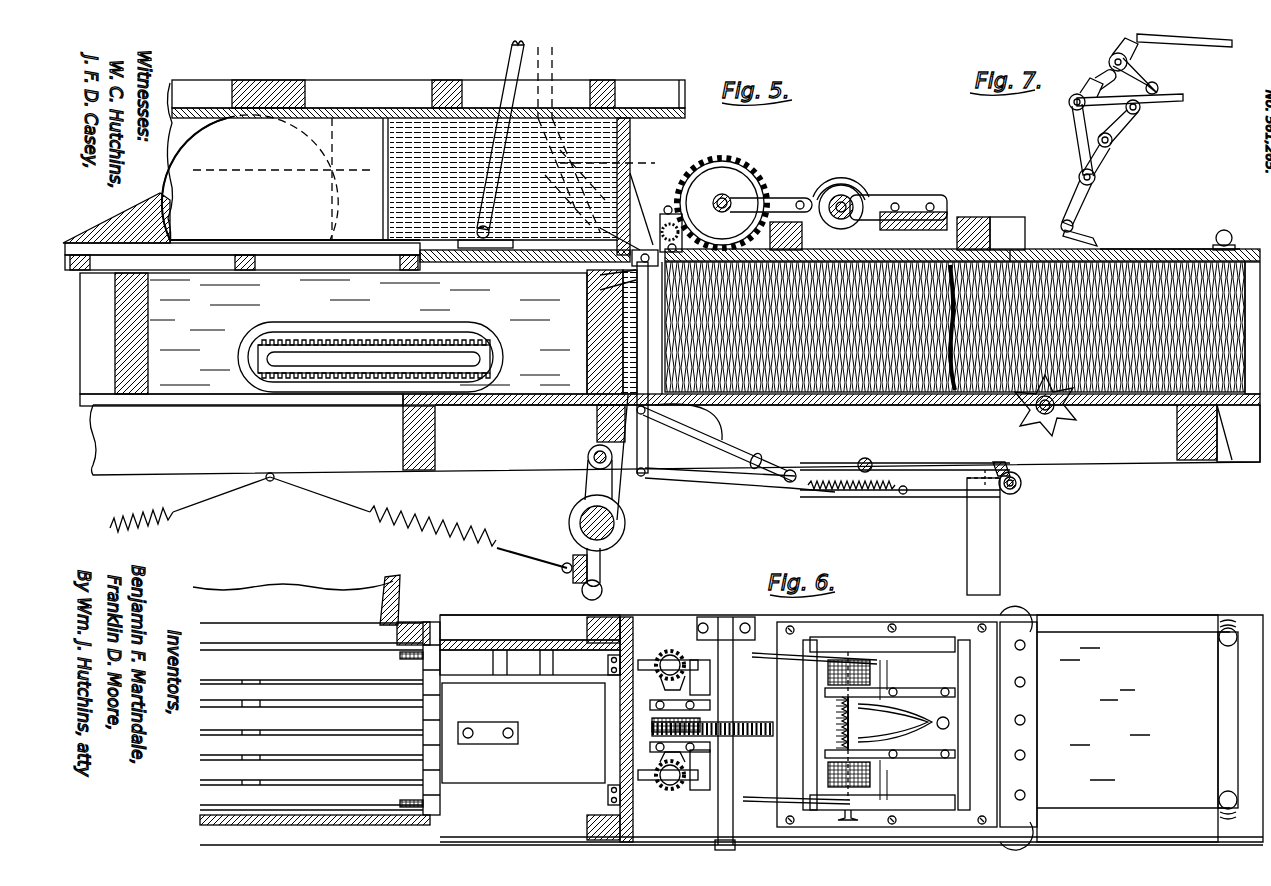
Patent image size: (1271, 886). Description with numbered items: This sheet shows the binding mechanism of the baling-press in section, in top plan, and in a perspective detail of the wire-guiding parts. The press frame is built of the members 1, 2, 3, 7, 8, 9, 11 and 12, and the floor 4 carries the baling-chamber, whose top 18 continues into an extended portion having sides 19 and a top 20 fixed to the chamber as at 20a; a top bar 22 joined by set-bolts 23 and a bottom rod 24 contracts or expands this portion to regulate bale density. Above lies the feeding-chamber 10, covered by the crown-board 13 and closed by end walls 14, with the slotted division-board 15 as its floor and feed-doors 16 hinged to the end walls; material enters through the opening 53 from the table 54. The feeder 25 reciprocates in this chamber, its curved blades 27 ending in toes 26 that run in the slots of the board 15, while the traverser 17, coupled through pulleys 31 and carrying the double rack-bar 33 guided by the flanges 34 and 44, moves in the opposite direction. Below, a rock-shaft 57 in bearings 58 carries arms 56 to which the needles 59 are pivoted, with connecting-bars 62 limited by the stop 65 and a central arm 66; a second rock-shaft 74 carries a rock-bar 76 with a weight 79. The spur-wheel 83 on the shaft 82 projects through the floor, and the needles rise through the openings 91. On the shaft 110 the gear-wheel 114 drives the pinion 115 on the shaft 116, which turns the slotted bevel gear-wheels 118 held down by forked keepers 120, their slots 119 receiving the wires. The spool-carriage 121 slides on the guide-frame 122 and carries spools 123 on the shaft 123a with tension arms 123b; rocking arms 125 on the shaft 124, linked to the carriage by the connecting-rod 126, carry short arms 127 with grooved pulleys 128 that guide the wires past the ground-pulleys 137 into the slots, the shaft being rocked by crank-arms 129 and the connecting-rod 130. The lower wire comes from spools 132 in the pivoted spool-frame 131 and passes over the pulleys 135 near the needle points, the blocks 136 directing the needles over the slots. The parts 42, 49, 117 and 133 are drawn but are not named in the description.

In FIG. 6, the frame-piece 1 is at (851, 728).
In FIG. 5, the frame member 2 is at (1177, 420).
In FIG. 5, the frame member 3 is at (670, 437).
In FIG. 5, the floor 4 is at (889, 400).
In FIG. 5, the frame member 7 is at (1007, 239).
In FIG. 6, the frame member 7 is at (734, 725).
In FIG. 6, the frame member 8 is at (884, 725).
In FIG. 6, the frame member 9 is at (431, 630).
In FIG. 5, the feeding-chamber 10 is at (389, 179).
In FIG. 6, the feeding-chamber 10 is at (804, 726).
In FIG. 5, the frame 11 is at (428, 94).
In FIG. 5, the frame member 12 is at (278, 75).
In FIG. 5, the crown-board 13 is at (350, 108).
In FIG. 5, the end walls 14 is at (630, 136).
In FIG. 6, the end walls 14 is at (633, 627).
In FIG. 5, the slotted division-board 15 is at (242, 256).
In FIG. 6, the slotted division-board 15 is at (311, 716).
In FIG. 5, the feed-doors 16 is at (512, 250).
In FIG. 6, the feed-doors 16 is at (523, 732).
In FIG. 5, the traverser 17 is at (358, 332).
In FIG. 5, the top of baling-chamber 18 is at (845, 253).
In FIG. 5, the sides of extended portion 19 is at (962, 328).
In FIG. 5, the top of extended portion 20 is at (1148, 250).
In FIG. 6, the top of extended portion 20 is at (1127, 728).
In FIG. 6, the fixed attachment of top 20a is at (1018, 724).
In FIG. 5, the top bar 22 is at (1213, 247).
In FIG. 6, the top bar 22 is at (1222, 738).
In FIG. 5, the set-bolts 23 is at (1218, 234).
In FIG. 6, the set-bolts 23 is at (1219, 640).
In FIG. 5, the rod 24 is at (1232, 400).
In FIG. 5, the feeder 25 is at (205, 128).
In FIG. 5, the extended toes 26 is at (173, 241).
In FIG. 5, the curved blades 27 is at (168, 200).
In FIG. 6, the pulleys 31 is at (400, 656).
In FIG. 5, the double rack-bar 33 is at (405, 340).
In FIG. 5, the flange 34 is at (335, 333).
In FIG. 5, the block 42 is at (378, 333).
In FIG. 5, the flange 44 is at (488, 334).
In FIG. 5, the lever 49 is at (514, 63).
In FIG. 5, the opening 53 is at (294, 177).
In FIG. 6, the opening 53 is at (731, 735).
In FIG. 6, the table 54 is at (296, 600).
In FIG. 5, the arms 56 is at (740, 448).
In FIG. 5, the rock-shaft 57 is at (1021, 481).
In FIG. 5, the bearings 58 is at (1022, 490).
In FIG. 5, the needles 59 is at (636, 300).
In FIG. 5, the connecting-bars 62 is at (740, 483).
In FIG. 5, the stop 65 is at (762, 457).
In FIG. 5, the arm 66 is at (1010, 465).
In FIG. 5, the rock-shaft 74 is at (872, 462).
In FIG. 5, the rock-bar 76 is at (820, 478).
In FIG. 5, the weight 79 is at (983, 536).
In FIG. 5, the shaft 82 is at (1022, 408).
In FIG. 5, the spur-wheel 83 is at (1066, 405).
In FIG. 5, the openings 91 is at (668, 405).
In FIG. 5, the shaft 110 is at (745, 200).
In FIG. 6, the shaft 110 is at (734, 696).
In FIG. 5, the gear-wheel 114 is at (722, 203).
In FIG. 6, the gear-wheel 114 is at (713, 720).
In FIG. 5, the pinion 115 is at (666, 219).
In FIG. 6, the shaft 116 is at (652, 724).
In FIG. 5, the bevel gear 117 is at (722, 203).
In FIG. 6, the bevel gear 117 is at (655, 692).
In FIG. 5, the bevel gear-wheels 118 is at (600, 275).
In FIG. 6, the bevel gear-wheels 118 is at (681, 665).
In FIG. 6, the slots 119 is at (646, 800).
In FIG. 5, the forked keepers 120 is at (733, 217).
In FIG. 6, the forked keepers 120 is at (712, 670).
In FIG. 5, the spool-carriage 121 is at (945, 212).
In FIG. 6, the spool-carriage 121 is at (887, 724).
In FIG. 5, the guide-frame 122 is at (978, 217).
In FIG. 6, the guide-frame 122 is at (886, 722).
In FIG. 5, the spools 123 is at (860, 197).
In FIG. 6, the spools 123 is at (834, 722).
In FIG. 6, the shaft 123a is at (858, 723).
In FIG. 6, the arms 123b is at (903, 723).
In FIG. 5, the rocking shaft 124 is at (600, 290).
In FIG. 7, the rocking shaft 124 is at (1118, 130).
In FIG. 7, the rocking arms 125 is at (1150, 84).
In FIG. 5, the connecting-rod 126 is at (835, 194).
In FIG. 7, the connecting-rod 126 is at (1236, 47).
In FIG. 6, the connecting-rod 126 is at (760, 661).
In FIG. 5, the short arms 127 is at (636, 290).
In FIG. 7, the short arms 127 is at (1128, 55).
In FIG. 5, the grooved pulleys 128 is at (707, 206).
In FIG. 7, the grooved pulleys 128 is at (1100, 72).
In FIG. 7, the crank-arms 129 is at (1078, 202).
In FIG. 7, the connecting-rod 130 is at (1090, 238).
In FIG. 5, the spool-frame 131 is at (603, 583).
In FIG. 5, the spools 132 is at (627, 527).
In FIG. 5, the rod 133 is at (500, 550).
In FIG. 5, the grooved pulleys 135 is at (618, 228).
In FIG. 5, the blocks 136 is at (646, 209).
In FIG. 6, the blocks 136 is at (608, 665).
In FIG. 7, the ground-pulleys 137 is at (1140, 110).